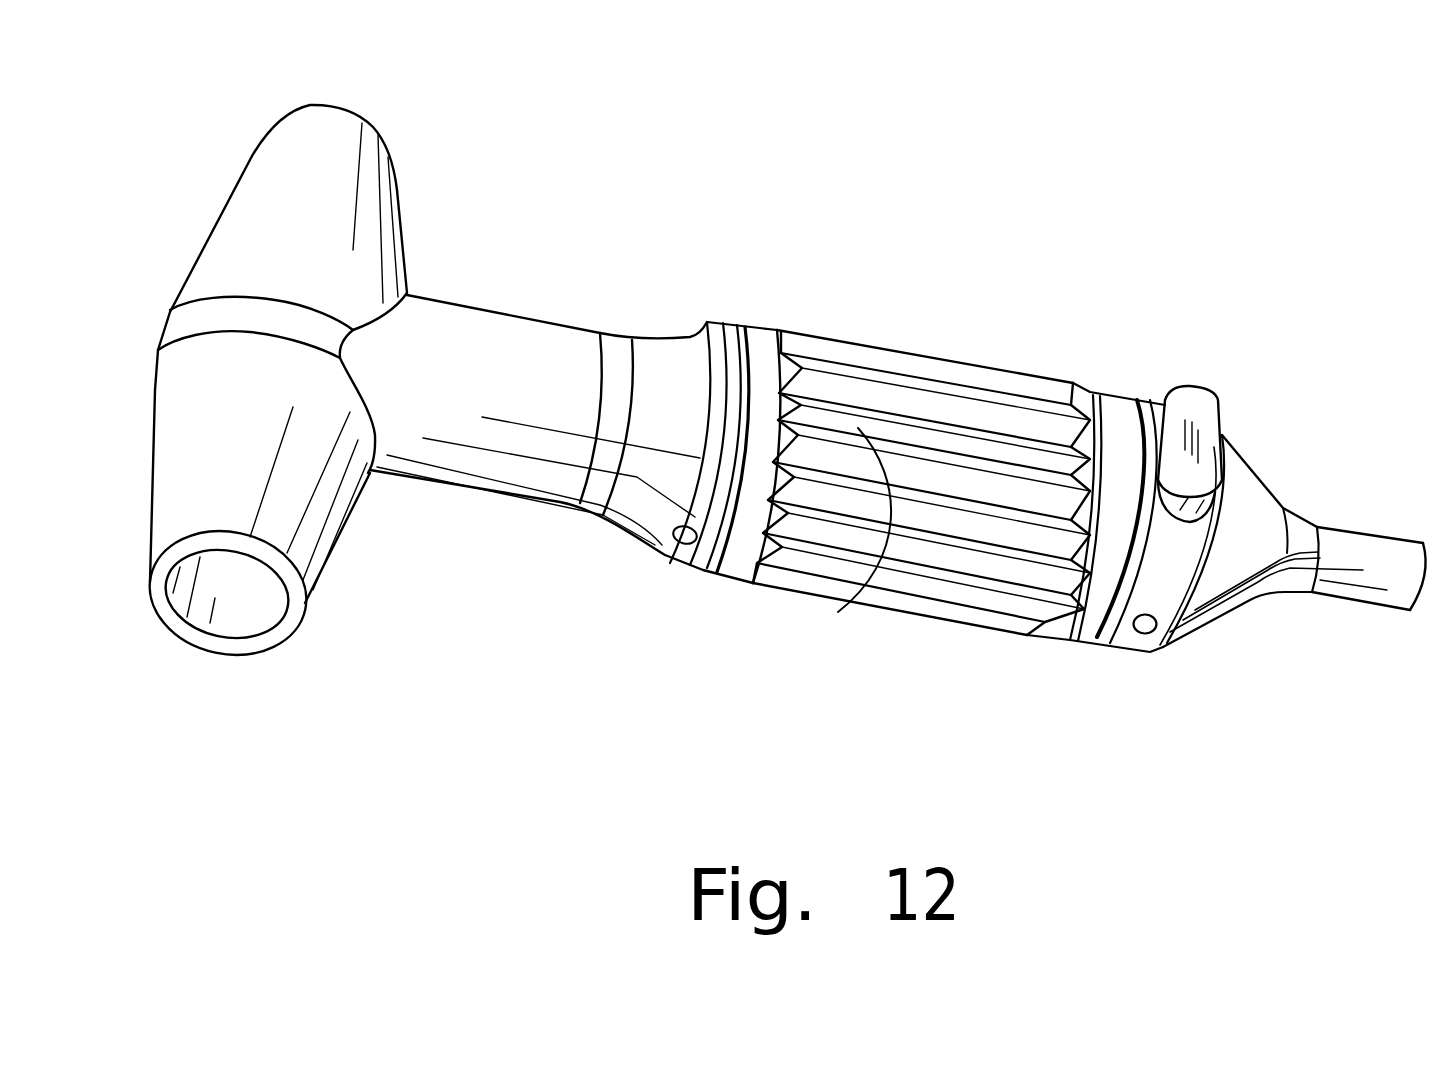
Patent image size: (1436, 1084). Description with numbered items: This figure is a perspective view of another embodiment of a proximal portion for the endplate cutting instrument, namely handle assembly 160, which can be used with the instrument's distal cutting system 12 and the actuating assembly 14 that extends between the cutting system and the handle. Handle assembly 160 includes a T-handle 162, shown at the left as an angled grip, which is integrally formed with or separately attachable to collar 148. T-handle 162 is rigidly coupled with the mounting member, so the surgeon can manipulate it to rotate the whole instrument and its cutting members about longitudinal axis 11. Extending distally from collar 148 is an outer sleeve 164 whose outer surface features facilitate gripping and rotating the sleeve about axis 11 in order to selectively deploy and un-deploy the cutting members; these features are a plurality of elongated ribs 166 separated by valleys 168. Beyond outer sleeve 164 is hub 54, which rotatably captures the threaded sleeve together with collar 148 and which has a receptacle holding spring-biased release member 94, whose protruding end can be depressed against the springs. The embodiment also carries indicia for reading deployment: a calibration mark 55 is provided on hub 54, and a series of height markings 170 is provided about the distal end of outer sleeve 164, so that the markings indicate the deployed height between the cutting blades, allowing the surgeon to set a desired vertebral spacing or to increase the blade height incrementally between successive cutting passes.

The longitudinal axis 11 is at (1143, 461).
The distal cutting system 12 is at (1187, 570).
The actuating assembly 14 is at (1352, 514).
The hub 54 is at (1167, 650).
The calibration mark 55 is at (1170, 577).
The release member 94 is at (1195, 403).
The collar 148 is at (692, 338).
The handle assembly 160 is at (1022, 328).
The T-handle 162 is at (468, 317).
The outer sleeve 164 is at (921, 497).
The elongated ribs 166 is at (1015, 430).
The valleys 168 is at (837, 493).
The height markings 170 is at (1100, 537).